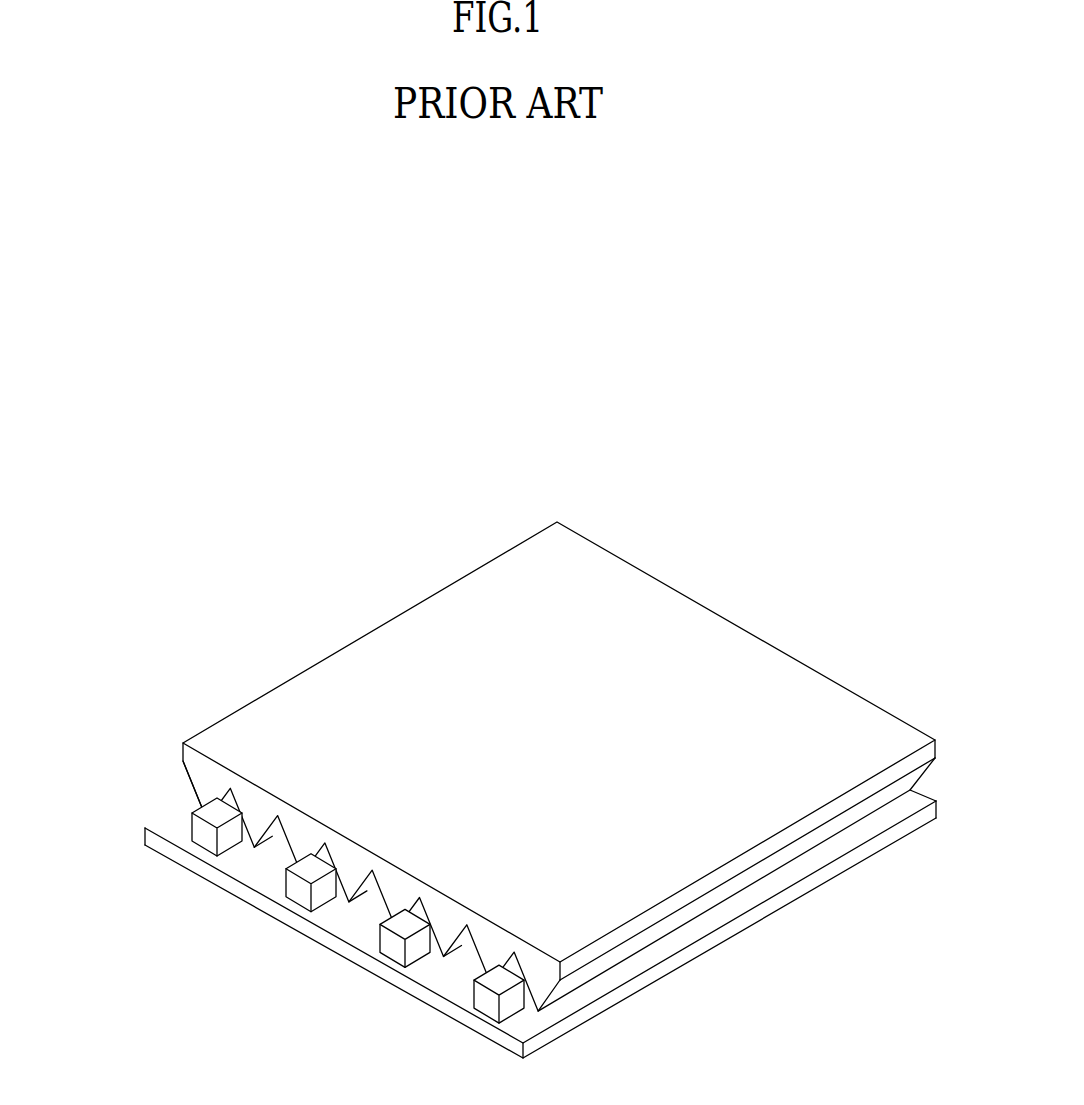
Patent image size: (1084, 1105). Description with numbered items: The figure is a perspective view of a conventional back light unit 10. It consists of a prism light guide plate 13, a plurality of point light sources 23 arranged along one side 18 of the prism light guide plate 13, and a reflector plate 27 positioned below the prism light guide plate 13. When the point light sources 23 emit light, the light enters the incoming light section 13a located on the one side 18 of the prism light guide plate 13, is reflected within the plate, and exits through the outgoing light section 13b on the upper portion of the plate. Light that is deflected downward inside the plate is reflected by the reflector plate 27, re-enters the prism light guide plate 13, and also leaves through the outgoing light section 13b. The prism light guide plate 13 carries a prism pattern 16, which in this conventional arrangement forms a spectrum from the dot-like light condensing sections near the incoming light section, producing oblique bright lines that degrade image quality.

The back light unit 10 is at (652, 389).
The prism light guide plate 13 is at (706, 584).
The incoming light section 13a is at (395, 893).
The outgoing light section 13b is at (392, 630).
The prism pattern 16 is at (263, 852).
The one side 18 is at (196, 778).
The point light sources 23 is at (303, 892).
The reflector plate 27 is at (457, 998).